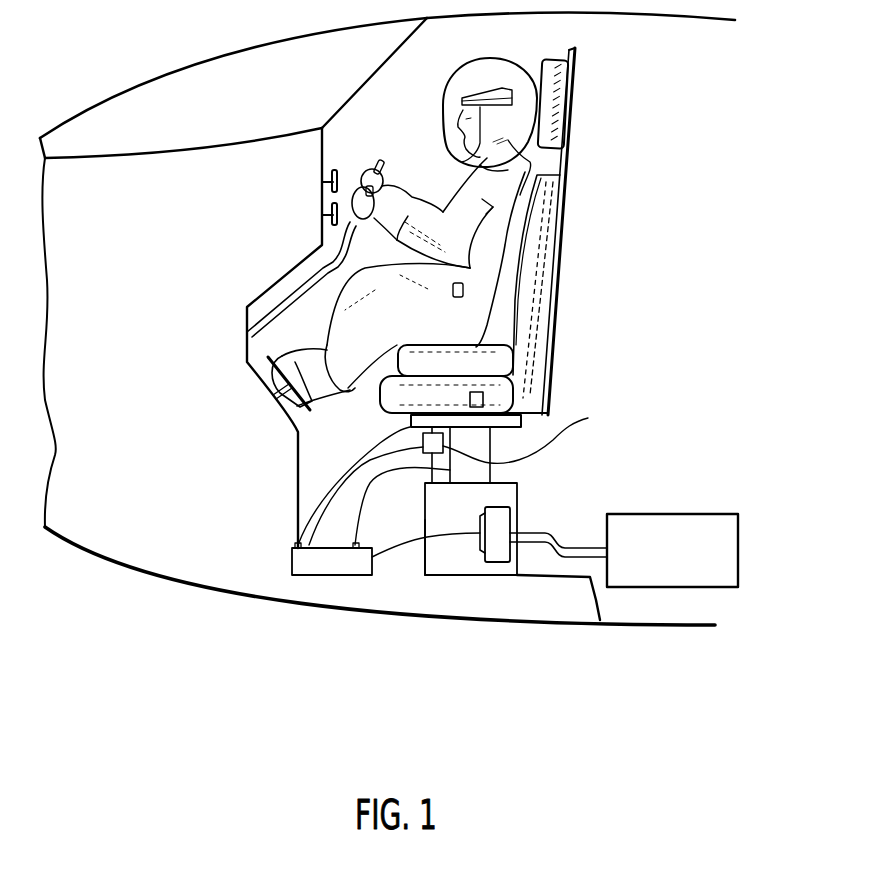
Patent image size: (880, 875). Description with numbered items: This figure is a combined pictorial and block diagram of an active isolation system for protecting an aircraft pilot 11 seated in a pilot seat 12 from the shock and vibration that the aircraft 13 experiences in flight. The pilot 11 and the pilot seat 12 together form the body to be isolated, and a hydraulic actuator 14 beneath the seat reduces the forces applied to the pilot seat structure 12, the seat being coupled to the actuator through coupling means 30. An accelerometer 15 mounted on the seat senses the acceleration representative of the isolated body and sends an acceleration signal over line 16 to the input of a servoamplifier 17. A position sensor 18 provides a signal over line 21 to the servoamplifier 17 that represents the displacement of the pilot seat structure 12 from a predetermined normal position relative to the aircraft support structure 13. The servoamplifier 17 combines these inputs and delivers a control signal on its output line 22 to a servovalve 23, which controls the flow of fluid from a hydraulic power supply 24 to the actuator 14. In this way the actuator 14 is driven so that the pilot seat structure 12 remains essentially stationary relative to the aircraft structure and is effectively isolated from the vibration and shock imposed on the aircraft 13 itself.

The aircraft pilot 11 is at (493, 75).
The pilot seat 12 is at (543, 317).
The aircraft 13 is at (187, 73).
The hydraulic actuator 14 is at (507, 490).
The accelerometer 15 is at (484, 399).
The line 16 is at (345, 478).
The servoamplifier 17 is at (327, 567).
The position sensor 18 is at (492, 478).
The line 21 is at (359, 515).
The output line 22 is at (448, 537).
The servovalve 23 is at (498, 553).
The hydraulic power supply 24 is at (653, 518).
The coupling means 30 is at (490, 430).